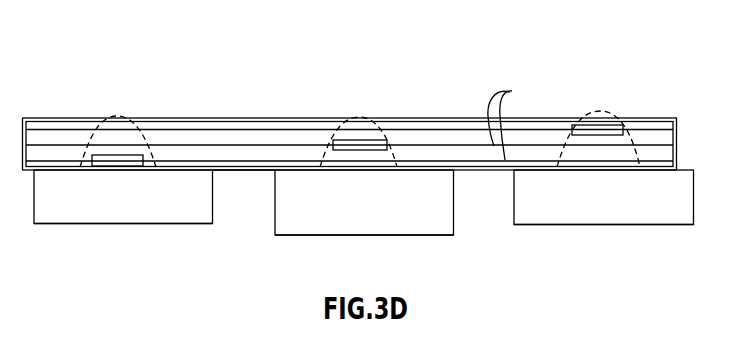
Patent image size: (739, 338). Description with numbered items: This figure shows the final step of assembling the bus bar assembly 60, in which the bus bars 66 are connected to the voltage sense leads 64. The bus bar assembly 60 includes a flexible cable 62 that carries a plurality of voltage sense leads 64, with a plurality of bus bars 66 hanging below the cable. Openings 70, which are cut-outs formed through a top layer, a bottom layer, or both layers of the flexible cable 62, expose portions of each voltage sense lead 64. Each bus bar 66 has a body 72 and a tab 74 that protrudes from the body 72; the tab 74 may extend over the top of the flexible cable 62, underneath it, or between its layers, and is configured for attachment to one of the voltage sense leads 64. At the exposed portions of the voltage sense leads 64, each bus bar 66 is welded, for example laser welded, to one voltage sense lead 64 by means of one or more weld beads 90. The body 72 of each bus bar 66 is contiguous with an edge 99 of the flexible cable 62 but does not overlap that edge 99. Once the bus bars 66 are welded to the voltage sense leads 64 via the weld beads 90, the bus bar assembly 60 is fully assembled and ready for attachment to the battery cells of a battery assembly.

The bus bar assembly 60 is at (350, 97).
The flexible cable 62 is at (450, 128).
The voltage sense leads 64 is at (512, 122).
The bus bars 66 is at (127, 210).
The openings 70 is at (132, 155).
The body 72 is at (187, 209).
The tab 74 is at (147, 142).
The weld beads 90 is at (115, 155).
The edge 99 is at (236, 179).